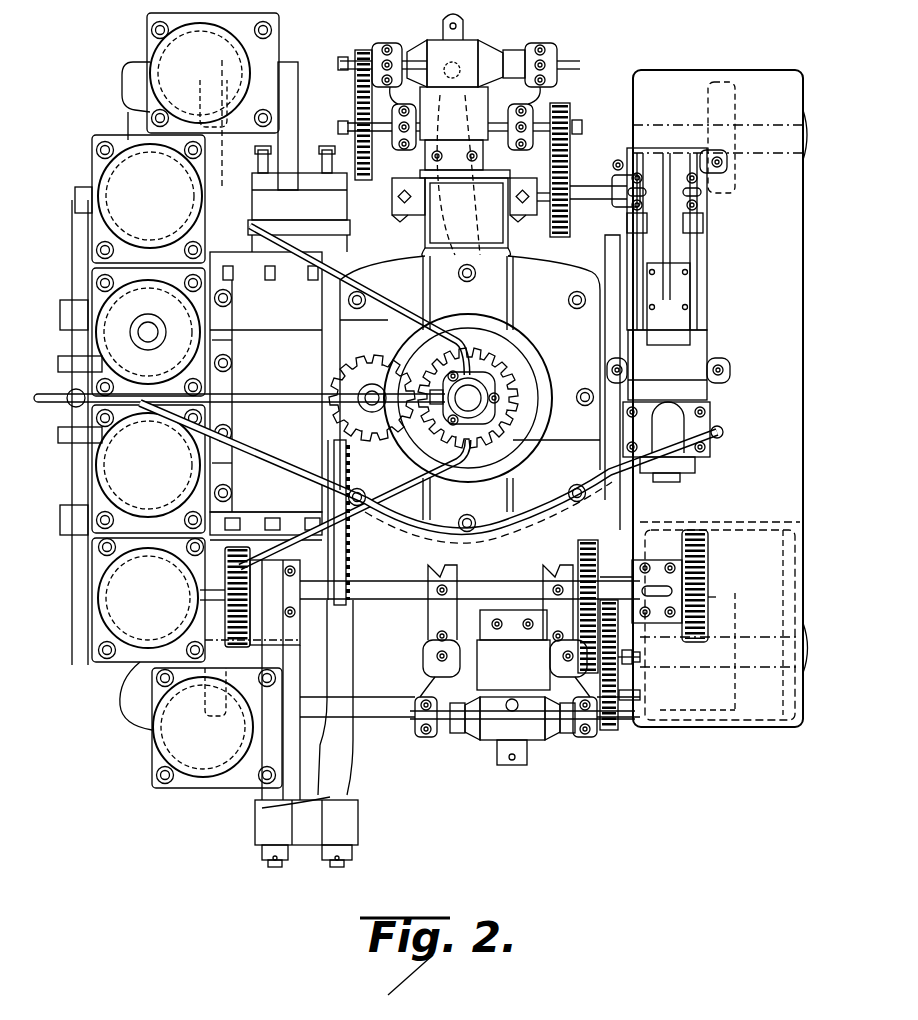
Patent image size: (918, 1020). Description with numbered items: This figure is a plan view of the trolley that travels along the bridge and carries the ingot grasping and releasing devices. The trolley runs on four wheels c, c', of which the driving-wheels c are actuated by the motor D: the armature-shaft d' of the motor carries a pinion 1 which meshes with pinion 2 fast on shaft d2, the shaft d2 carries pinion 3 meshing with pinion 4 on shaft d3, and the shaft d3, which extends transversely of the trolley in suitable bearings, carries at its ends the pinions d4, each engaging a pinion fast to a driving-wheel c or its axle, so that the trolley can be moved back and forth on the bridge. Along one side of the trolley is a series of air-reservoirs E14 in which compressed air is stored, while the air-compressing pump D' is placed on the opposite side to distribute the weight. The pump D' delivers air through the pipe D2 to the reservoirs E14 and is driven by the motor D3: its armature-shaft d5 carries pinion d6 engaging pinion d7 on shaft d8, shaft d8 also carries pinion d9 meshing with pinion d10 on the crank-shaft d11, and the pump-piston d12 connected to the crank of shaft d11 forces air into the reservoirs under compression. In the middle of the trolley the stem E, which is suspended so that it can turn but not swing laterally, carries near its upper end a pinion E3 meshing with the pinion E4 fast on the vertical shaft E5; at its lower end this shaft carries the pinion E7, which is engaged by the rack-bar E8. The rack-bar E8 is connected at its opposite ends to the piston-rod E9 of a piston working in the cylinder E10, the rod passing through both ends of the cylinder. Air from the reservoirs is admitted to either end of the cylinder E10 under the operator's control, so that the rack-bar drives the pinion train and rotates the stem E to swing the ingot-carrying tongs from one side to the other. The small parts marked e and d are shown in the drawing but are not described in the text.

The air-reservoir E14 is at (187, 400).
The trolley wheel c' is at (467, 127).
The slot e is at (214, 717).
The cylinder E10 is at (280, 343).
The vertical shaft E5 is at (330, 405).
The pinion E4 is at (372, 448).
The pipe D2 is at (612, 475).
The pinion E3 is at (508, 382).
The pinion E7 is at (375, 368).
The stem E is at (470, 354).
The motor D3 is at (466, 50).
The armature-shaft d5 is at (428, 33).
The pinion d7 is at (356, 100).
The pinion d6 is at (356, 60).
The shaft d8 is at (520, 150).
The pinion d9 is at (597, 150).
The pinion d10 is at (597, 179).
The crank-shaft d11 is at (610, 205).
The driving-wheel c is at (720, 411).
The pump-piston d12 is at (677, 363).
The air-compressing pump D' is at (687, 442).
The rack-bar E8 is at (346, 548).
The piston-rod E9 is at (280, 753).
The gear d is at (251, 597).
The shaft d3 is at (510, 575).
The motor D is at (522, 731).
The armature-shaft d' is at (433, 729).
The pinion 1 is at (604, 726).
The pinion 4 is at (598, 562).
The pinion 3 is at (601, 666).
The pinion 2 is at (633, 692).
The shaft d2 is at (625, 650).
The pinion d4 is at (708, 566).